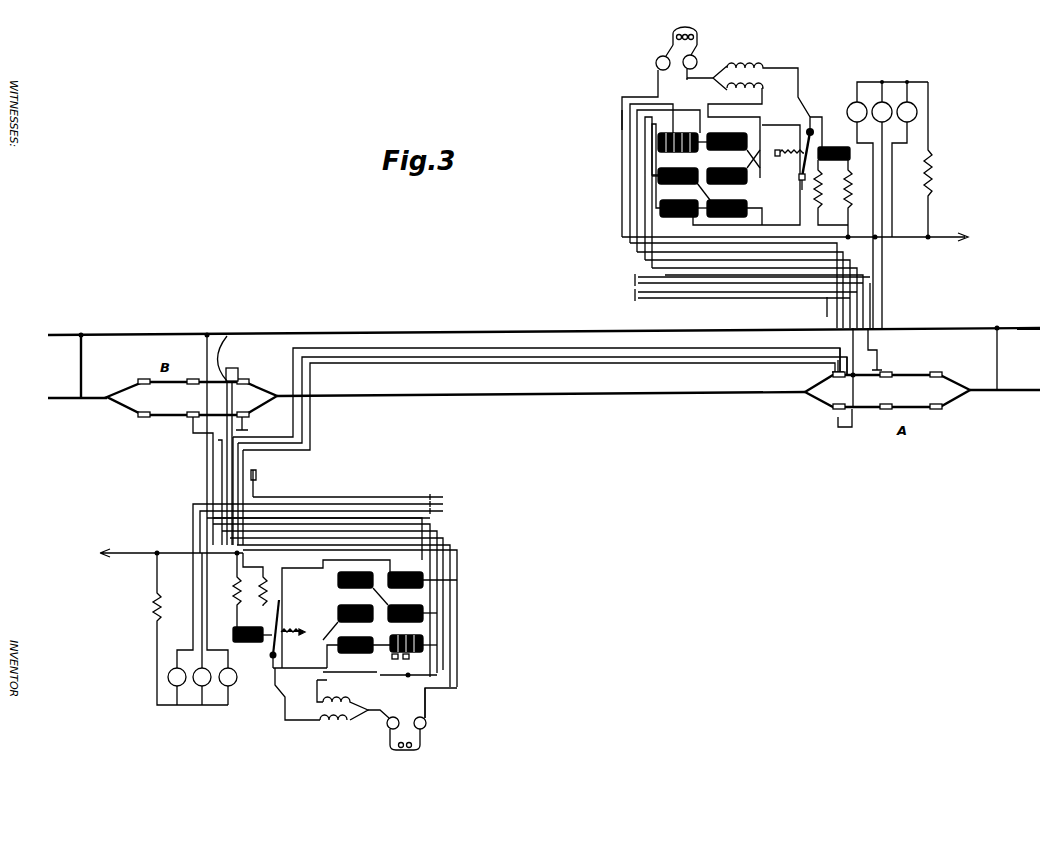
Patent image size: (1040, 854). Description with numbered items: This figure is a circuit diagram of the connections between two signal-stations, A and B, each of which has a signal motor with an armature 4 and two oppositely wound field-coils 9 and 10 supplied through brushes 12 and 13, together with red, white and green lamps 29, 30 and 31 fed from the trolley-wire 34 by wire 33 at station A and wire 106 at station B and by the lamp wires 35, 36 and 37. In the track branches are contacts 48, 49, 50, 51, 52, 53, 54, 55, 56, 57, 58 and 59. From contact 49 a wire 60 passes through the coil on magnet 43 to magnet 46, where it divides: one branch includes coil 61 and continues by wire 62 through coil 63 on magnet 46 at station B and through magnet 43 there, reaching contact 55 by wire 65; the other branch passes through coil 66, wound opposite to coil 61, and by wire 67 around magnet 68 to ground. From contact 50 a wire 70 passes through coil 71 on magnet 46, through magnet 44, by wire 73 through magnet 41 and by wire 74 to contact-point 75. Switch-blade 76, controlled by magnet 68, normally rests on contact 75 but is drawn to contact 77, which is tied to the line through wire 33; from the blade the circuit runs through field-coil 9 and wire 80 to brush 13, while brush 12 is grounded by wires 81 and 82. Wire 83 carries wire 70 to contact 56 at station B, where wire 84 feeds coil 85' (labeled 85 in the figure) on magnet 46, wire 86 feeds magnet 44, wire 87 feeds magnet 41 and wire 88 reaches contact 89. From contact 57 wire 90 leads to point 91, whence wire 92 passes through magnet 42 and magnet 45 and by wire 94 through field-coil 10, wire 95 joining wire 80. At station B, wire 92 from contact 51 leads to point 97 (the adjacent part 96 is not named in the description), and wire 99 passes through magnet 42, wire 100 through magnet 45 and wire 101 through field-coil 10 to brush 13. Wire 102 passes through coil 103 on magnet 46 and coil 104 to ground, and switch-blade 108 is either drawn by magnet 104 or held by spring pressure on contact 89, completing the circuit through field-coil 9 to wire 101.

The armature 4 is at (680, 32).
The field-coil 9 is at (768, 90).
The field-coil 10 is at (755, 85).
The brush 12 is at (656, 62).
The brush 13 is at (694, 55).
The red lamp 29 is at (168, 680).
The white lamp 30 is at (202, 690).
The green lamp 31 is at (235, 685).
The wire 33 is at (997, 365).
The trolley-wire 34 is at (322, 333).
The wire 35 is at (660, 280).
The wire 36 is at (700, 285).
The wire 37 is at (748, 294).
The magnet 41 is at (725, 218).
The magnet 42 is at (547, 394).
The magnet 43 is at (541, 395).
The magnet 44 is at (660, 183).
The magnet 45 is at (537, 393).
The magnet 46 is at (688, 170).
The contact 48 is at (943, 372).
The contact 49 is at (893, 373).
The contact 50 is at (838, 378).
The contact-point 51 is at (248, 379).
The contact 52 is at (193, 378).
The contact 53 is at (142, 378).
The contact 54 is at (143, 418).
The contact 55 is at (192, 418).
The contact 56 is at (243, 411).
The contact 57 is at (847, 410).
The contact 58 is at (890, 410).
The contact 59 is at (942, 410).
The wire 60 is at (872, 350).
The coil 61 is at (684, 126).
The wire 62 is at (450, 540).
The coil 63 is at (406, 636).
The wire 65 is at (213, 477).
The coil 66 is at (685, 135).
The wire 67 is at (795, 140).
The magnet 68 is at (834, 146).
The wire 70 is at (652, 158).
The coil 71 is at (658, 142).
The wire 73 is at (706, 191).
The wire 74 is at (780, 222).
The contact-point 75 is at (788, 188).
The switch-blade 76 is at (788, 176).
The contact 77 is at (831, 192).
The wire 80 is at (690, 78).
The wire 81 is at (620, 127).
The wire 82 is at (937, 234).
The wire 83 is at (302, 420).
The wire 84 is at (308, 545).
The wire 85 is at (294, 584).
The coil 85' is at (458, 689).
The wire 86 is at (440, 630).
The wire 87 is at (423, 588).
The wire 88 is at (276, 572).
The contact 89 is at (292, 634).
The wire 90 is at (860, 390).
The point 91 is at (845, 347).
The wire 92 is at (538, 348).
The wire 94 is at (775, 106).
The wire 95 is at (705, 72).
The contact block 96 is at (232, 368).
The point 97 is at (224, 435).
The wire 99 is at (264, 479).
The wire 100 is at (330, 588).
The wire 101 is at (363, 682).
The wire 102 is at (236, 556).
The coil 103 is at (391, 662).
The coil 104 is at (252, 644).
The wire 106 is at (207, 453).
The switch-blade 108 is at (292, 630).